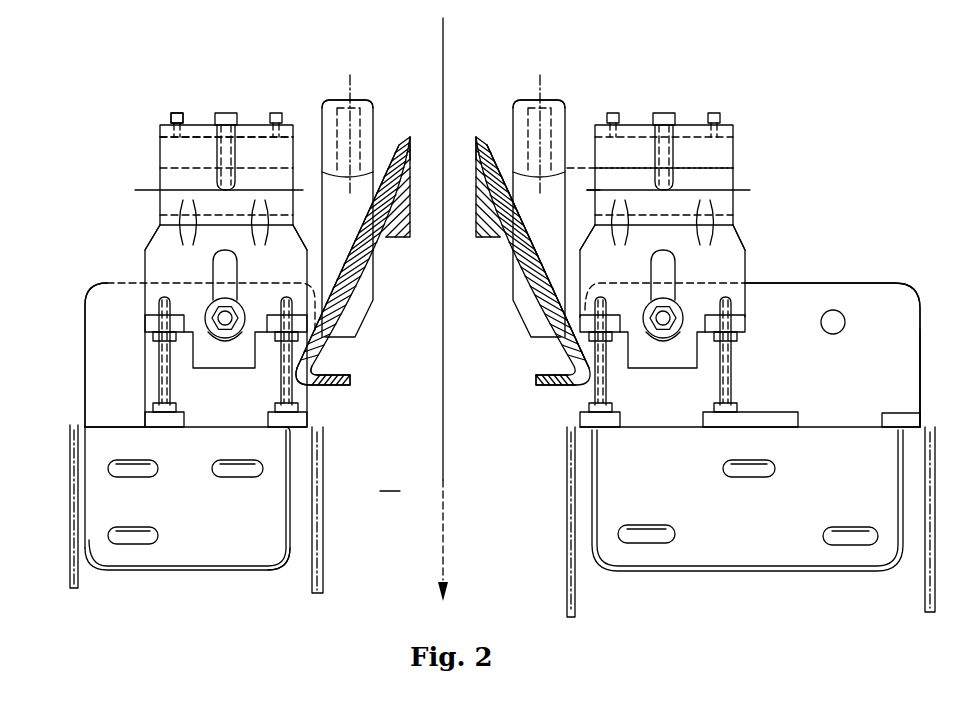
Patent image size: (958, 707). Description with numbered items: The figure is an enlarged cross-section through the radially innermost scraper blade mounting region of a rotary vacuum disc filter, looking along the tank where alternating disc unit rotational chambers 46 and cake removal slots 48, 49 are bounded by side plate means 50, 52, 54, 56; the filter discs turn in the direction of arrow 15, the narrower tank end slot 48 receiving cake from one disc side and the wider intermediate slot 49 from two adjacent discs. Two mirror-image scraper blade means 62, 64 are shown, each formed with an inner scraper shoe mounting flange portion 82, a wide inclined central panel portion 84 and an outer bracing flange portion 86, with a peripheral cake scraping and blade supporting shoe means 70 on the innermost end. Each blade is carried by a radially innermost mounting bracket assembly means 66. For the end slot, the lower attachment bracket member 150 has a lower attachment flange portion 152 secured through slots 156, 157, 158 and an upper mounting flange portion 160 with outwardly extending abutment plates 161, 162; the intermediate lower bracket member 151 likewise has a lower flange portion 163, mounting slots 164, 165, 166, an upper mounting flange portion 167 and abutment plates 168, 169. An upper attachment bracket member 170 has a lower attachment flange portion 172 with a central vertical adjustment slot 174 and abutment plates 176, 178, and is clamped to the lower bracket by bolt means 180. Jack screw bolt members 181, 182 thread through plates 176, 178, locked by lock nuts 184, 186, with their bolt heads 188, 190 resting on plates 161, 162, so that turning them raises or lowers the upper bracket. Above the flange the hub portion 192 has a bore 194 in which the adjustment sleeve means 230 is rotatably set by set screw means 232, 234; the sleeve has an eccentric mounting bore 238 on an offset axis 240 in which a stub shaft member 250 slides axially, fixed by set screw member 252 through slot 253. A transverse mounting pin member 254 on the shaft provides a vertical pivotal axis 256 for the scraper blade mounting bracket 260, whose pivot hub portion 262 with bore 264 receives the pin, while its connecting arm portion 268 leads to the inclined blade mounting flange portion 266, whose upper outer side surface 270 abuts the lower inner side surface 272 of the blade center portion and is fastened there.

The direction of rotation arrow 15 is at (447, 575).
The disc unit rotational chamber 46 is at (390, 478).
The tank end cake removal slot 48 is at (178, 582).
The intermediate cake removal slot 49 is at (760, 587).
The side plate means 50 is at (68, 543).
The side plate means 52 is at (325, 560).
The side plate means 54 is at (577, 590).
The side plate means 56 is at (913, 572).
The scraper blade means 62 is at (343, 392).
The scraper blade means 64 is at (548, 394).
The radially innermost mounting bracket assembly means 66 is at (87, 290).
The peripheral cake scraping and scraper blade supporting shoe means 70 is at (413, 120).
The inner scraper shoe mounting flange portion 82 is at (386, 245).
The central panel portion 84 is at (348, 262).
The outer bracing flange portion 86 is at (350, 382).
The end cake slot lower attachment bracket member 150 is at (278, 572).
The intermediate cake slot lower attachment bracket member 151 is at (928, 418).
The lower attachment flange portion 152 is at (232, 552).
The slot 156 is at (123, 470).
The slot 157 is at (250, 472).
The slot 158 is at (130, 537).
The upper mounting flange portion 160 is at (108, 392).
The abutment plate 161 is at (178, 418).
The abutment plate 162 is at (287, 418).
The lower flange portion 163 is at (710, 548).
The mounting slot 164 is at (650, 532).
The mounting slot 165 is at (753, 468).
The mounting slot 166 is at (855, 535).
The upper mounting flange portion 167 is at (885, 313).
The abutment plate 168 is at (608, 420).
The abutment plate 169 is at (735, 420).
The upper attachment bracket member 170 is at (156, 225).
The lower attachment flange portion 172 is at (157, 265).
The central vertical adjustment attachment slot 174 is at (230, 277).
The abutment plate 176 is at (150, 323).
The abutment plate 178 is at (278, 336).
The bolt means 180 is at (242, 334).
The jack screw bolt member 181 is at (157, 378).
The jack screw bolt member 182 is at (275, 408).
The lock nut 184 is at (155, 338).
The lock nut 186 is at (310, 357).
The bolt head 188 is at (152, 406).
The bolt head 190 is at (298, 410).
The hub portion 192 is at (172, 118).
The central axially extending bore 194 is at (190, 143).
The adjustment sleeve means 230 is at (303, 120).
The set screw means 232 is at (177, 112).
The set screw means 234 is at (276, 112).
The eccentric mounting bore 238 is at (710, 172).
The central axis of eccentric bore 240 is at (740, 193).
The stub shaft member 250 is at (575, 175).
The set screw member 252 is at (663, 112).
The slot 253 is at (663, 178).
The transverse mounting pin member 254 is at (528, 135).
The pivotal axis 256 is at (546, 100).
The scraper blade mounting bracket 260 is at (368, 96).
The pivot hub portion 262 is at (330, 100).
The central vertically extending bore 264 is at (360, 117).
The inclined blade mounting flange portion 266 is at (530, 300).
The connecting arm portion 268 is at (525, 270).
The upper outer side surface 270 is at (515, 250).
The lower inner side surface 272 is at (557, 320).